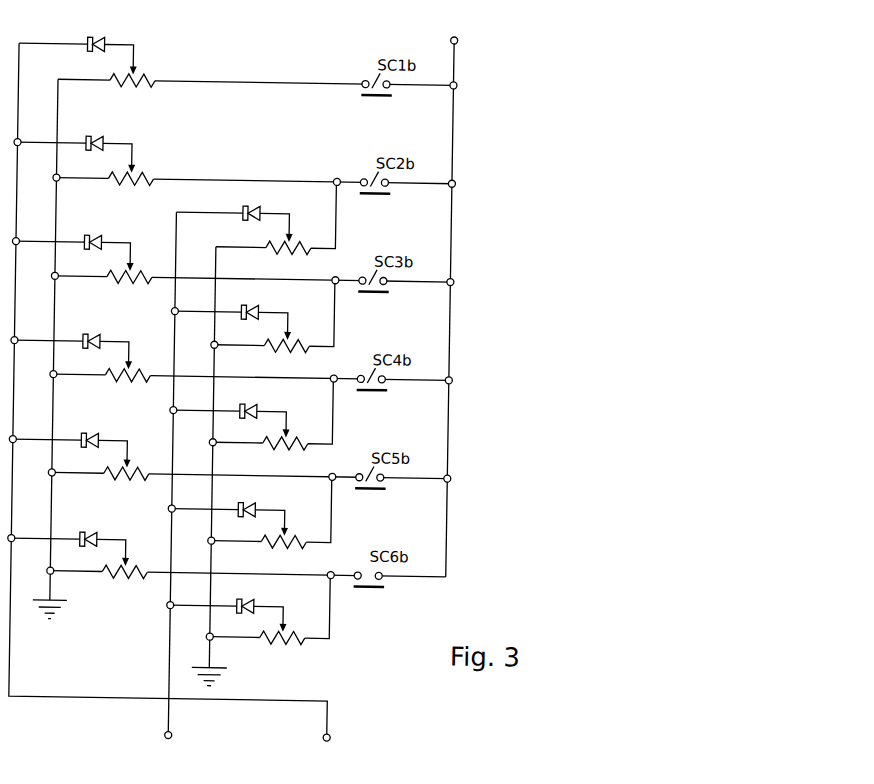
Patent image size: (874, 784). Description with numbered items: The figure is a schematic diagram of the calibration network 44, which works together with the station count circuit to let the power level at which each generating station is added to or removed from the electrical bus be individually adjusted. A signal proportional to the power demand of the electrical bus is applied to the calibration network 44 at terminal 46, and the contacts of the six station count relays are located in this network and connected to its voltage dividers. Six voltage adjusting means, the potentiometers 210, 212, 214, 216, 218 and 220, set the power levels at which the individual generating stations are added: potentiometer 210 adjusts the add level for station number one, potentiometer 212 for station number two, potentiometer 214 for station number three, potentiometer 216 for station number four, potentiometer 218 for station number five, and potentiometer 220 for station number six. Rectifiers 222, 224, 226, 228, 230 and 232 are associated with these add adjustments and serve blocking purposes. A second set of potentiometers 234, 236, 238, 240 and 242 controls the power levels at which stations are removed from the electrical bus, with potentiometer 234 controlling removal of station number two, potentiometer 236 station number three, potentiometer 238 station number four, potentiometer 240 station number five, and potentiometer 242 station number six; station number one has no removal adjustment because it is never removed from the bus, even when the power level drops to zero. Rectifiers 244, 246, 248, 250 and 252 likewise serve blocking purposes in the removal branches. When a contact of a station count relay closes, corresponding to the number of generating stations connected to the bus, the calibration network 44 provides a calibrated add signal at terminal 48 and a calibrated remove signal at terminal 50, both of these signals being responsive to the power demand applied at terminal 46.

The calibration network 44 is at (267, 44).
The terminal 46 is at (452, 38).
The terminal 48 is at (332, 740).
The terminal 50 is at (174, 740).
The potentiometer 210 is at (131, 93).
The potentiometer 212 is at (131, 191).
The potentiometer 214 is at (131, 290).
The potentiometer 216 is at (131, 388).
The potentiometer 218 is at (131, 486).
The potentiometer 220 is at (131, 584).
The rectifier 222 is at (85, 38).
The rectifier 224 is at (85, 138).
The rectifier 226 is at (85, 236).
The rectifier 228 is at (85, 336).
The rectifier 230 is at (85, 434).
The rectifier 232 is at (85, 534).
The potentiometer 234 is at (292, 257).
The potentiometer 236 is at (292, 355).
The potentiometer 238 is at (292, 452).
The potentiometer 240 is at (292, 551).
The potentiometer 242 is at (292, 647).
The rectifier 244 is at (243, 206).
The rectifier 246 is at (243, 304).
The rectifier 248 is at (243, 404).
The rectifier 250 is at (243, 502).
The rectifier 252 is at (243, 598).